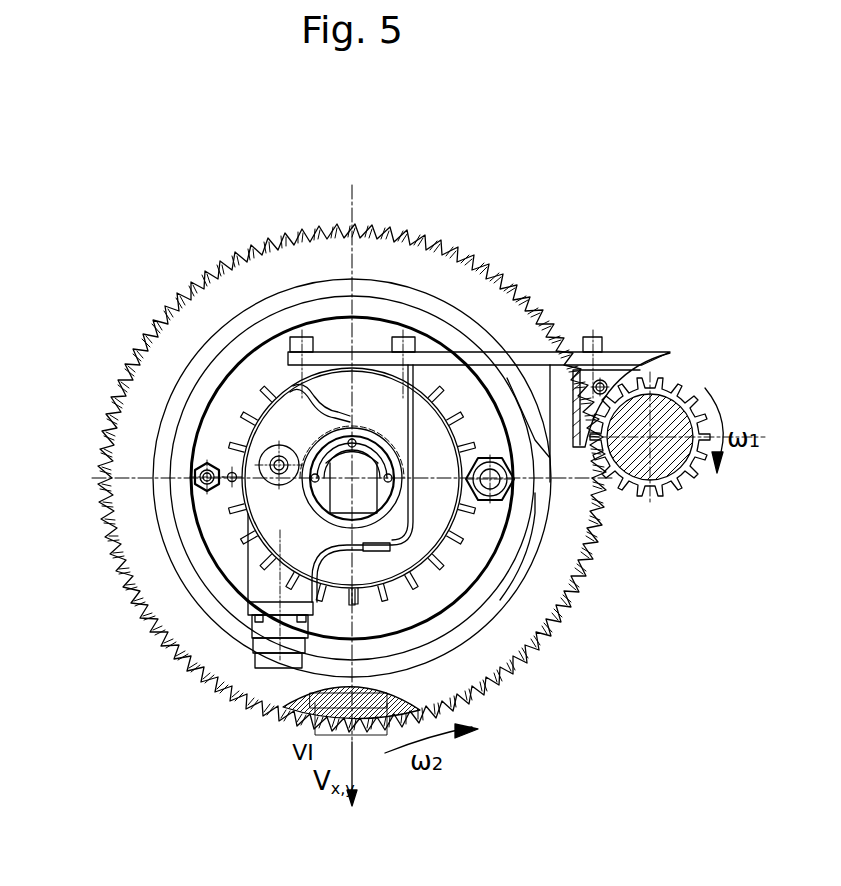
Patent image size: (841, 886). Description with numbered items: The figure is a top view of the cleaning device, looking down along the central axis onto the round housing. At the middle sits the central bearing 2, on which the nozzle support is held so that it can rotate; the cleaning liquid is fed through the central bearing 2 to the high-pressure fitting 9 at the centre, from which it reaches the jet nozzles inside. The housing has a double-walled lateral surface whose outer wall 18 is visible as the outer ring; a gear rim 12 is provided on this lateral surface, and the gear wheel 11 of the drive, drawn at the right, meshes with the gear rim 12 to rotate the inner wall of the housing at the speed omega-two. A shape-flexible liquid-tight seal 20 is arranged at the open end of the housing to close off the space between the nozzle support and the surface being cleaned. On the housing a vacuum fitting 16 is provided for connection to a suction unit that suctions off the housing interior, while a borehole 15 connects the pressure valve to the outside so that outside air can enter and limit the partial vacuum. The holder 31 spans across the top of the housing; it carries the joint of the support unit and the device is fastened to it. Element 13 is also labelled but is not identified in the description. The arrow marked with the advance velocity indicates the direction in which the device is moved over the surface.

The central bearing 2 is at (370, 397).
The high-pressure fitting 9 is at (345, 491).
The gear wheel 11 is at (683, 392).
The gear rim 12 is at (408, 242).
The fastening bolt 13 is at (204, 475).
The borehole 15 is at (230, 475).
The vacuum fitting 16 is at (512, 500).
The outer wall 18 is at (297, 727).
The shape-flexible liquid-tight seal 20 is at (452, 243).
The holder 31 is at (535, 358).